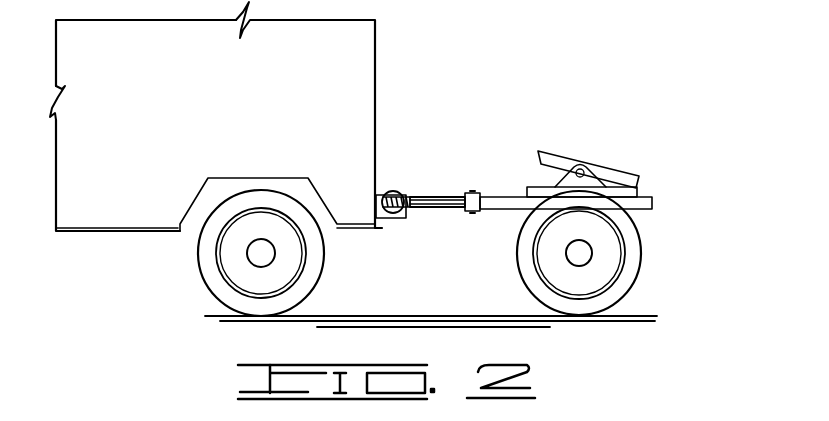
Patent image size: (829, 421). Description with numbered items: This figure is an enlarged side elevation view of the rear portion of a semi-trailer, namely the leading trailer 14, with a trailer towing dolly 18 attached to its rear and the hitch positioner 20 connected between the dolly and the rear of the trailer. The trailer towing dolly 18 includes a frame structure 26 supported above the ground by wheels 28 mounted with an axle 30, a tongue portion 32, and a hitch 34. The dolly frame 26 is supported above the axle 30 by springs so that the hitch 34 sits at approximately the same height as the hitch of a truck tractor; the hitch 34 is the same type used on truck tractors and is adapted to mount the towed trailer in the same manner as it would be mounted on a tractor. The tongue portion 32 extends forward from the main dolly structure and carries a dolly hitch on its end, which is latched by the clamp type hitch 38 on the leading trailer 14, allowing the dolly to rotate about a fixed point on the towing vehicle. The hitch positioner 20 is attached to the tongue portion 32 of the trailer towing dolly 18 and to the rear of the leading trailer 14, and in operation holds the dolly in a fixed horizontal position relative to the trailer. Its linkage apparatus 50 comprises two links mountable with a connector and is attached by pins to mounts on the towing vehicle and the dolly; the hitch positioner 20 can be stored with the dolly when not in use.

The leading trailer 14 is at (384, 52).
The trailer towing dolly 18 is at (609, 253).
The hitch positioner 20 is at (443, 194).
The frame structure 26 is at (652, 201).
The wheels 28 is at (630, 271).
The axle 30 is at (572, 258).
The tongue portion 32 is at (455, 196).
The hitch 34 is at (560, 160).
The clamp type hitch 38 is at (393, 191).
The hitch positioner linkage apparatus 50 is at (430, 212).